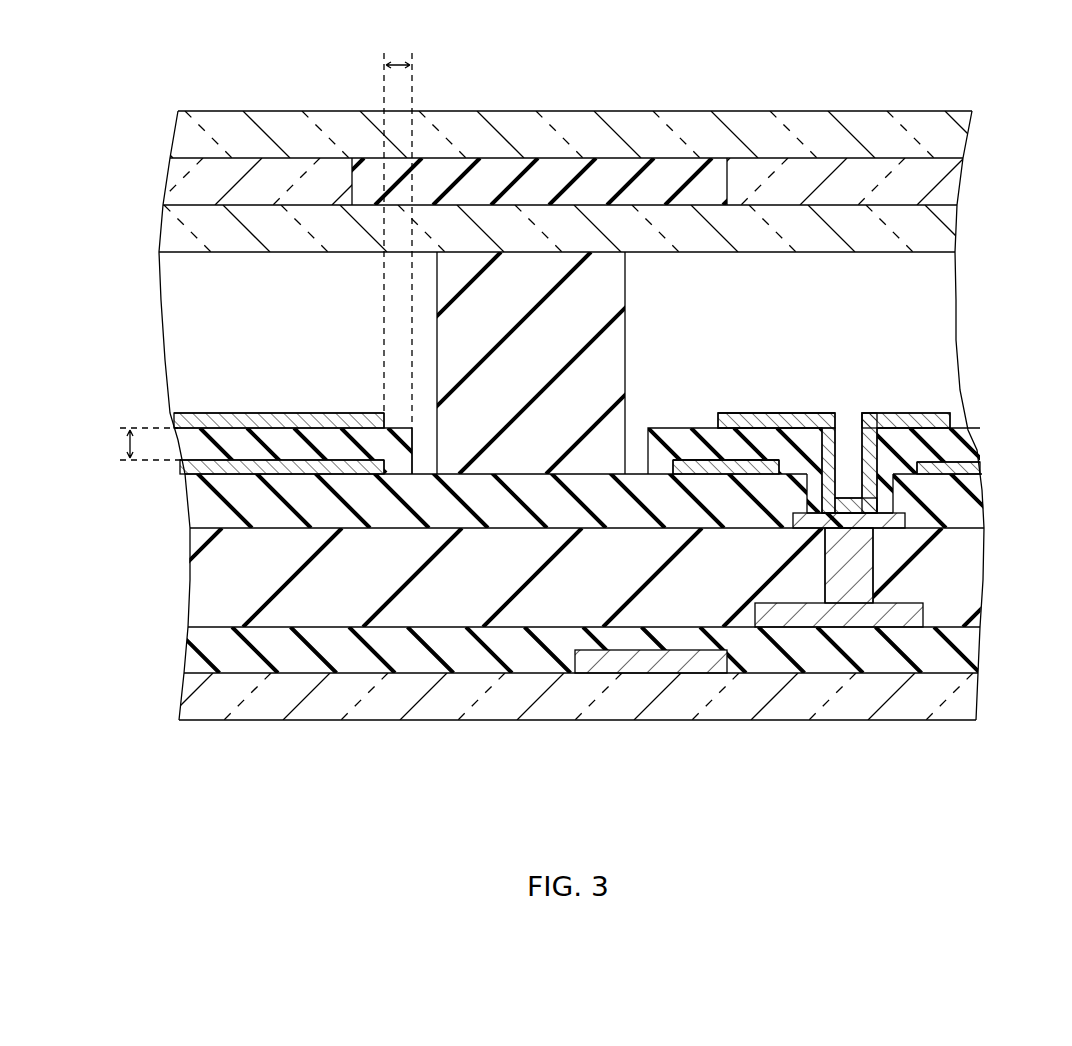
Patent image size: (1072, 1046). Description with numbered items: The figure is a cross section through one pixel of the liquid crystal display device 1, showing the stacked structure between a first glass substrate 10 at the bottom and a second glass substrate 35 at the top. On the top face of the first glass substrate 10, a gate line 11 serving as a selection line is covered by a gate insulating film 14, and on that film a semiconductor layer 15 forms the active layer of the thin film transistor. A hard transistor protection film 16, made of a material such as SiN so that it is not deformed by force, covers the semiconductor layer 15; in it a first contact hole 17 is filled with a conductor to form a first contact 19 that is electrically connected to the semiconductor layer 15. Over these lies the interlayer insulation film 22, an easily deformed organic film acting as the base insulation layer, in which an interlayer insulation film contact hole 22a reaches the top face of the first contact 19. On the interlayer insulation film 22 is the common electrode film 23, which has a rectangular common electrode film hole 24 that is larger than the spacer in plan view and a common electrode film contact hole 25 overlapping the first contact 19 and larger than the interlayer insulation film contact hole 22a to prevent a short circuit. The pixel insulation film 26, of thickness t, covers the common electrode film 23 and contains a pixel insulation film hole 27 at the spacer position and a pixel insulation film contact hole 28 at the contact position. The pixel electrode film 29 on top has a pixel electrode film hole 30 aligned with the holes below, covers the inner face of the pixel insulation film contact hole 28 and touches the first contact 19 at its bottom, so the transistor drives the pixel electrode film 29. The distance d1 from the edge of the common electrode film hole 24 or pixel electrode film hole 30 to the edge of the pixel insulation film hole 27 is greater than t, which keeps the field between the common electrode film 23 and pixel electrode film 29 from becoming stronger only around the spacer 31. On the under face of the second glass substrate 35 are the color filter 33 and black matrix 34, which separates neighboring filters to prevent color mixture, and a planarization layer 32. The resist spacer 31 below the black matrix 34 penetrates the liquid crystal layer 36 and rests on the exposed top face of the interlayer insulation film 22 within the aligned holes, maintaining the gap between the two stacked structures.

The liquid crystal display device 1 is at (973, 49).
The first glass substrate 10 is at (948, 688).
The gate line 11 is at (608, 665).
The gate insulating film 14 is at (950, 647).
The semiconductor layer 15 is at (900, 614).
The transistor protection film 16 is at (955, 555).
The first contact hole 17 is at (825, 578).
The first contact 19 is at (850, 575).
The interlayer insulation film 22 is at (958, 494).
The interlayer insulation film contact hole 22a is at (888, 507).
The common electrode film 23 is at (955, 467).
The common electrode film hole 24 is at (655, 470).
The common electrode film contact hole 25 is at (905, 482).
The pixel insulation film 26 is at (950, 437).
The pixel insulation film hole 27 is at (430, 456).
The pixel insulation film contact hole 28 is at (938, 420).
The pixel electrode film 29 is at (950, 414).
The pixel electrode film hole 30 is at (718, 412).
The spacer 31 is at (470, 275).
The planarization layer 32 is at (948, 230).
The color filter 33 is at (952, 184).
The black matrix 34 is at (589, 182).
The second glass substrate 35 is at (952, 137).
The liquid crystal layer 36 is at (945, 305).
The distance d1 is at (398, 226).
The thickness t is at (146, 444).